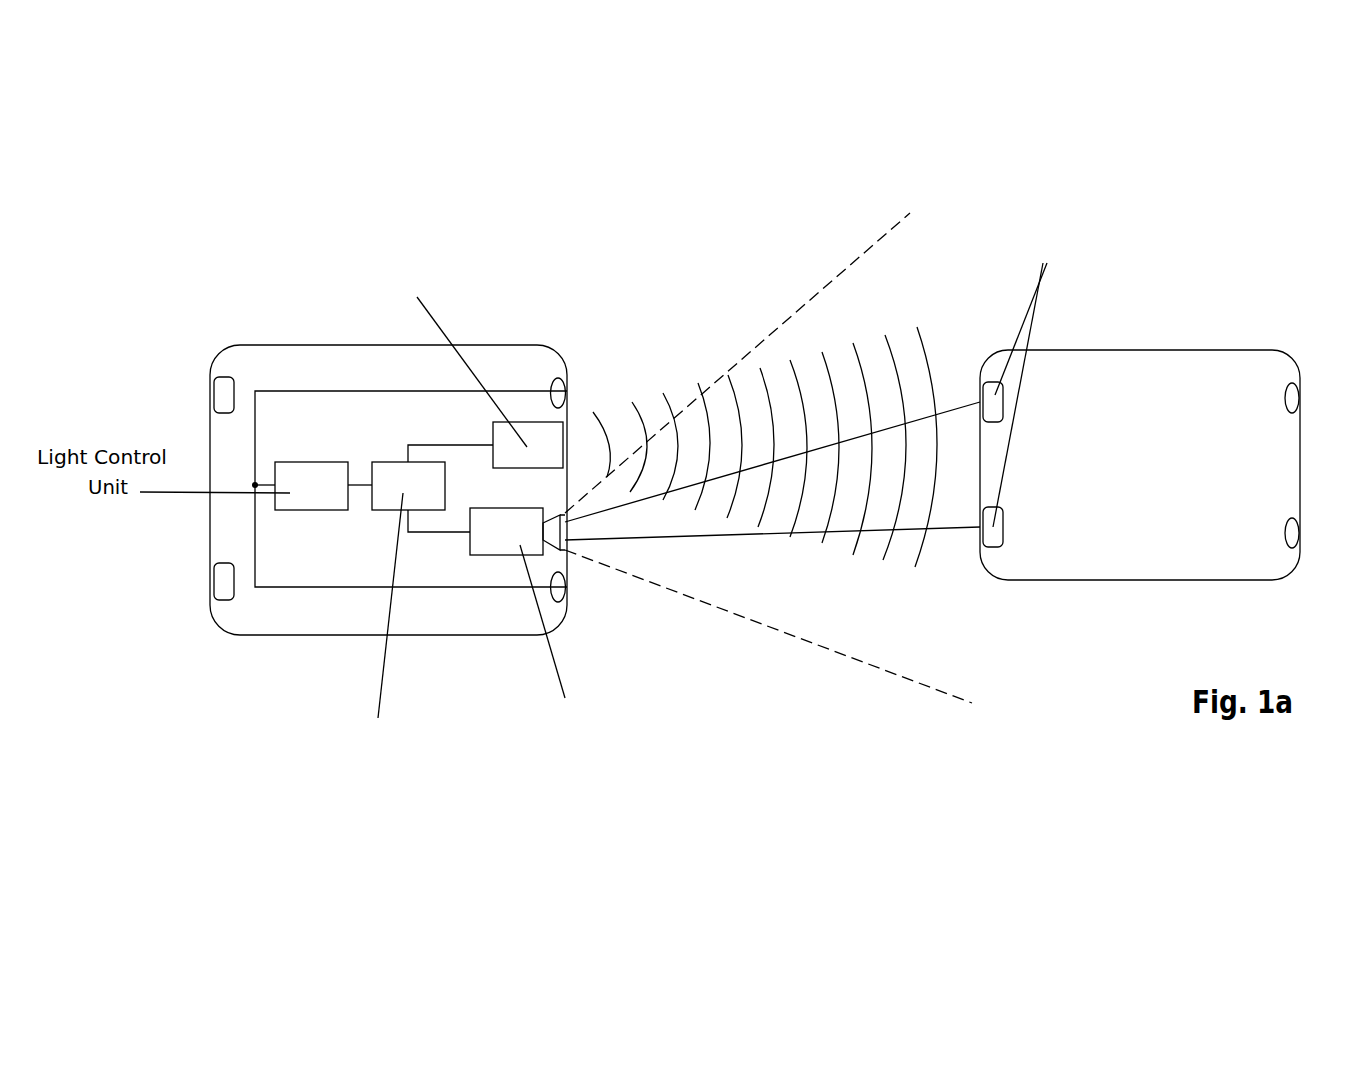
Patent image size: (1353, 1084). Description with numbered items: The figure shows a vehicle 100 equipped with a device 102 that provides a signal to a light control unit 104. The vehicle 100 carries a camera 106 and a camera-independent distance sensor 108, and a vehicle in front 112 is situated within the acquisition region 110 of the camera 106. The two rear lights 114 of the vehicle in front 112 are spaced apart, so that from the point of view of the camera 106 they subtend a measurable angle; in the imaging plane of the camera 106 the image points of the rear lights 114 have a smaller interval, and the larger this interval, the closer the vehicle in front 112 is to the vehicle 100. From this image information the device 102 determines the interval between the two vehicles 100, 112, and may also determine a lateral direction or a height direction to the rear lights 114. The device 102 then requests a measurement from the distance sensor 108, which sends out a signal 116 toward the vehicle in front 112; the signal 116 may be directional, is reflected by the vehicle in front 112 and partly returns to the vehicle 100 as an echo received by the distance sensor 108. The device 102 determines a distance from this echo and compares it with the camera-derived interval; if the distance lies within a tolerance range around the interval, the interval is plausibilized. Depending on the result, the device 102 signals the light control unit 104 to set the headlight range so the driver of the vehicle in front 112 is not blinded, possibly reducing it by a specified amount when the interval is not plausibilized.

The vehicle 100 is at (305, 633).
The device 102 is at (398, 473).
The light control unit 104 is at (312, 473).
The camera 106 is at (502, 545).
The camera-independent distance sensor 108 is at (518, 430).
The acquisition region 110 is at (796, 624).
The vehicle in front 112 is at (1198, 348).
The rear lights 114 is at (995, 382).
The signal 116 is at (809, 343).